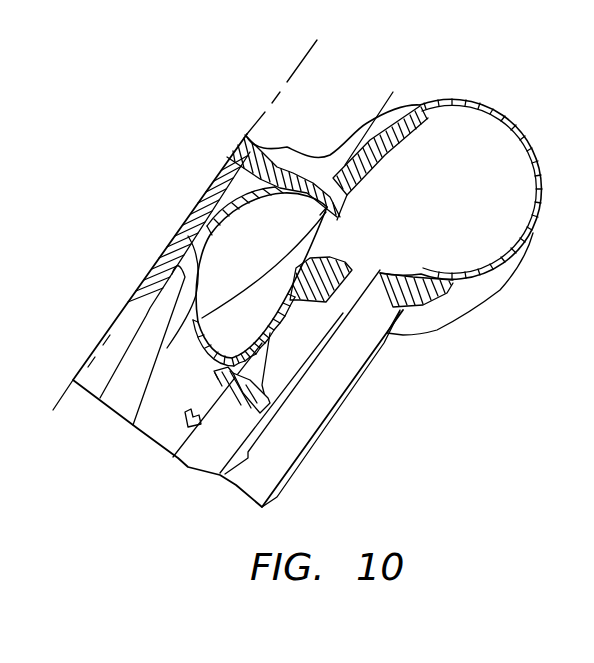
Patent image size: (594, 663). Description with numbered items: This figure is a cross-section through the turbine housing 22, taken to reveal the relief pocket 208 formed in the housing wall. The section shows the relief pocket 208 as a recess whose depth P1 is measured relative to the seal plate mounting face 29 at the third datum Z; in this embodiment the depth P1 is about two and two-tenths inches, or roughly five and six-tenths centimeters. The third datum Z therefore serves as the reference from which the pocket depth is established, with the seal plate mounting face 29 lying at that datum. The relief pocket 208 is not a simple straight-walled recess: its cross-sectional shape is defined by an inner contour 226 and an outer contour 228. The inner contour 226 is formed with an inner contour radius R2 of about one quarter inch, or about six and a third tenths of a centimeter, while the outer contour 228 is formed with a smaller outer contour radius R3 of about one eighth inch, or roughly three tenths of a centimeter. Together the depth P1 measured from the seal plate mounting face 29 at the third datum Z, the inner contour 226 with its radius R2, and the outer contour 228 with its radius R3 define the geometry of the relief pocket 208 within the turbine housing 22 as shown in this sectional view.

The turbine housing 22 is at (130, 477).
The seal plate mounting face 29 is at (182, 230).
The relief pocket 208 is at (330, 153).
The inner contour 226 is at (273, 170).
The outer contour 228 is at (340, 172).
The inner contour radius R2 is at (324, 216).
The outer contour radius R3 is at (333, 207).
The depth P1 is at (390, 98).
The third datum Z is at (300, 63).